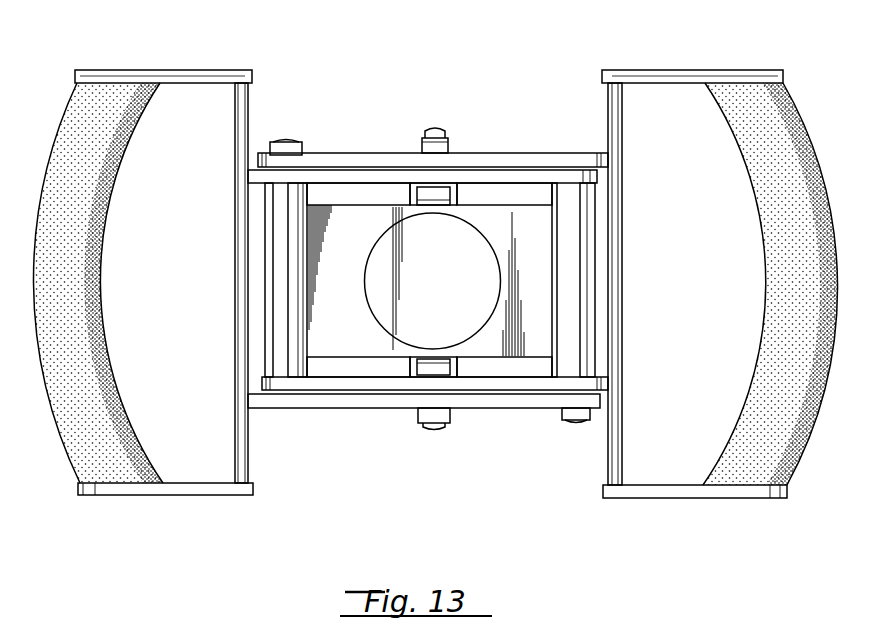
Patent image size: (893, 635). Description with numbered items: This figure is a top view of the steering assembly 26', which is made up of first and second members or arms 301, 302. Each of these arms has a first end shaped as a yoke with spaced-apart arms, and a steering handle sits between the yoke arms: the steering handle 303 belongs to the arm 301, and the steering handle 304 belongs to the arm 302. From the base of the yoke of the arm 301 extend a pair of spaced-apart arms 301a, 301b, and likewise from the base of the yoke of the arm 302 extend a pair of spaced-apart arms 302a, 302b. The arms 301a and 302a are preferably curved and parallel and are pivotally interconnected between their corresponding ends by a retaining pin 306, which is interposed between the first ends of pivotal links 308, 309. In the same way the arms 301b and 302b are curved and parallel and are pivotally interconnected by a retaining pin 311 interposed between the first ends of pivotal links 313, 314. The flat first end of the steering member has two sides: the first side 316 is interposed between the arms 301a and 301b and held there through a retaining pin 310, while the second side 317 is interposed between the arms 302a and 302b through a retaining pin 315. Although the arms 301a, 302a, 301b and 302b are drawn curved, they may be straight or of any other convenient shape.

The steering assembly 26' is at (524, 40).
The first arm 301 is at (697, 69).
The arm 301a is at (503, 391).
The arm 301b is at (556, 152).
The second arm 302 is at (168, 70).
The arm 302a is at (300, 409).
The arm 302b is at (343, 176).
The steering handle 303 is at (758, 201).
The steering handle 304 is at (110, 203).
The retaining pin 306 is at (437, 431).
The pivotal link 308 is at (417, 418).
The pivotal link 309 is at (412, 368).
The retaining pin 310 is at (287, 141).
The retaining pin 311 is at (440, 128).
The pivotal link 313 is at (417, 139).
The pivotal link 314 is at (453, 192).
The retaining pin 315 is at (575, 421).
The first side 316 is at (265, 341).
The second side 317 is at (595, 341).